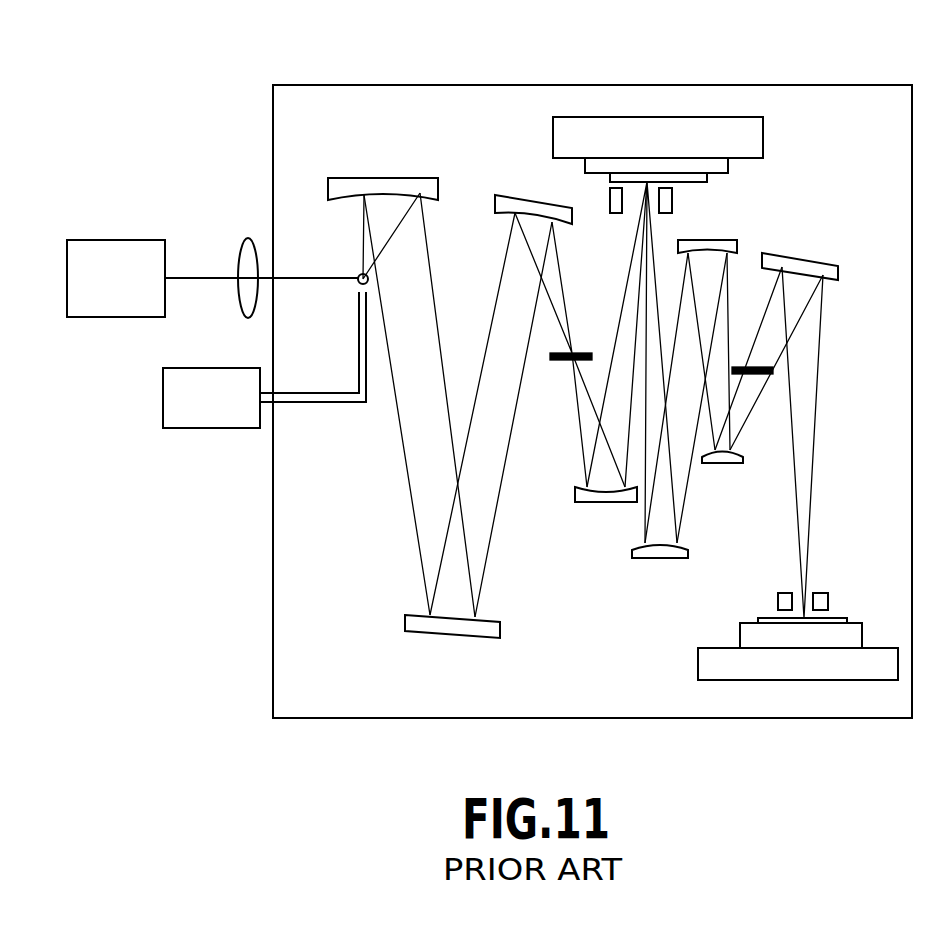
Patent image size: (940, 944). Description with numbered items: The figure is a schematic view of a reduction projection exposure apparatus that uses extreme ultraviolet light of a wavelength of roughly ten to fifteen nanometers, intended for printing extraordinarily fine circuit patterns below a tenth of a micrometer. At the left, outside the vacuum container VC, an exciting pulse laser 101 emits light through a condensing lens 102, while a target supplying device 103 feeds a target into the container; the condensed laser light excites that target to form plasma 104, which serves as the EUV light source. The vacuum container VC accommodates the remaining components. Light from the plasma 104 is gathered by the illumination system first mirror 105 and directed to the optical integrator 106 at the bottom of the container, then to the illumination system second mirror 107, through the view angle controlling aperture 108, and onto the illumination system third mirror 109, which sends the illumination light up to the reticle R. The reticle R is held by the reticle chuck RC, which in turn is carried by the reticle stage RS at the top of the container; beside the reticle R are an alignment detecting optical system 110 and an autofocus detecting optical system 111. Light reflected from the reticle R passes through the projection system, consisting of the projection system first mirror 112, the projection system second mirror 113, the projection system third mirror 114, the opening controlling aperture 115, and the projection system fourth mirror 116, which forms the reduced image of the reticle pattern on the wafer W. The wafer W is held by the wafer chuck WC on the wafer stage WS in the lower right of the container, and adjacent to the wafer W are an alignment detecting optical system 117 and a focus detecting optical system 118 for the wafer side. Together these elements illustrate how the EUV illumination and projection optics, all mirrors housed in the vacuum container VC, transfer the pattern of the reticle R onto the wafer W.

The exciting pulse laser 101 is at (97, 240).
The condensing lens 102 is at (238, 256).
The target supplying device 103 is at (190, 430).
The plasma 104 is at (358, 275).
The illumination system first mirror 105 is at (378, 178).
The optical integrator 106 is at (405, 622).
The illumination system second mirror 107 is at (516, 195).
The view angle controlling aperture 108 is at (556, 364).
The illumination system third mirror 109 is at (598, 503).
The alignment detecting optical system 110 is at (606, 188).
The autofocus detecting optical system 111 is at (673, 200).
The projection system first mirror 112 is at (656, 559).
The projection system second mirror 113 is at (708, 240).
The projection system third mirror 114 is at (724, 465).
The opening controlling aperture 115 is at (775, 371).
The projection system fourth mirror 116 is at (792, 257).
The alignment detecting optical system 117 is at (784, 593).
The focus detecting optical system 118 is at (828, 601).
The vacuum container VC is at (592, 386).
The reticle stage RS is at (640, 135).
The reticle chuck RC is at (680, 162).
The reticle R is at (708, 178).
The wafer W is at (758, 619).
The wafer chuck WC is at (744, 635).
The wafer stage WS is at (703, 662).